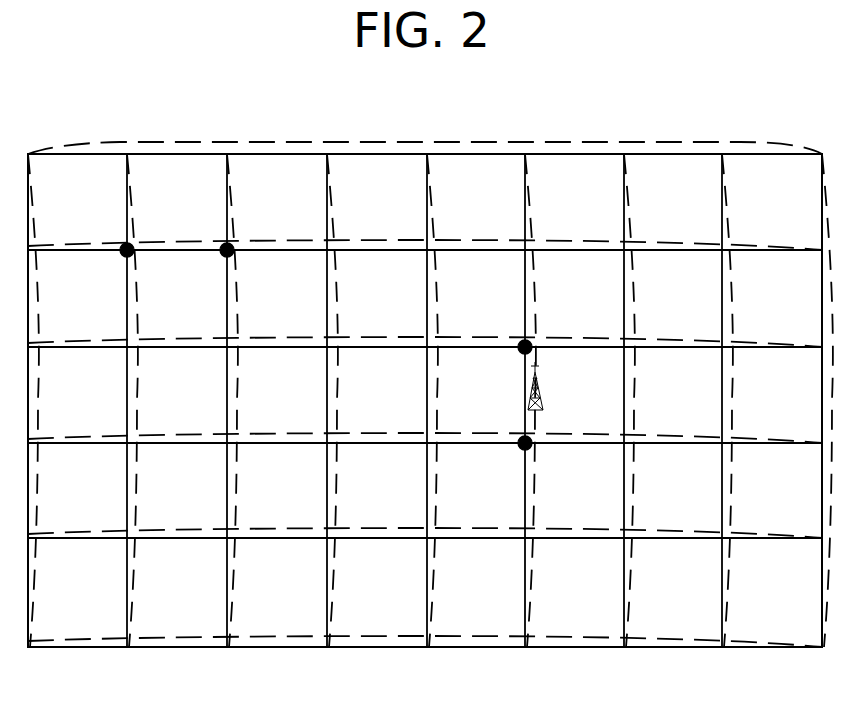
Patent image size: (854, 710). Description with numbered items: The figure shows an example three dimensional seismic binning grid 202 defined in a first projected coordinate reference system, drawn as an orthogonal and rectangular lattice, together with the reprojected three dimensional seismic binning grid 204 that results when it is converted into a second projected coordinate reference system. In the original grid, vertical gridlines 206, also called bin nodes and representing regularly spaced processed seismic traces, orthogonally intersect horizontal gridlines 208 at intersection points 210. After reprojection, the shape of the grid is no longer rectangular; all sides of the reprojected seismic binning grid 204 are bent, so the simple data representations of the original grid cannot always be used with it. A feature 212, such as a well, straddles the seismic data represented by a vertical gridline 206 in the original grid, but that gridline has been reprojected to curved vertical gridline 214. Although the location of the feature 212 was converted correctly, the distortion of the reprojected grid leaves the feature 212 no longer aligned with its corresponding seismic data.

The 3D seismic binning grid 202 is at (278, 152).
The reprojected 3D seismic binning grid 204 is at (466, 142).
The vertical gridlines 206 is at (226, 497).
The horizontal gridlines 208 is at (169, 251).
The intersection points 210 is at (223, 248).
The feature 212 is at (545, 392).
The curved vertical gridline 214 is at (533, 300).